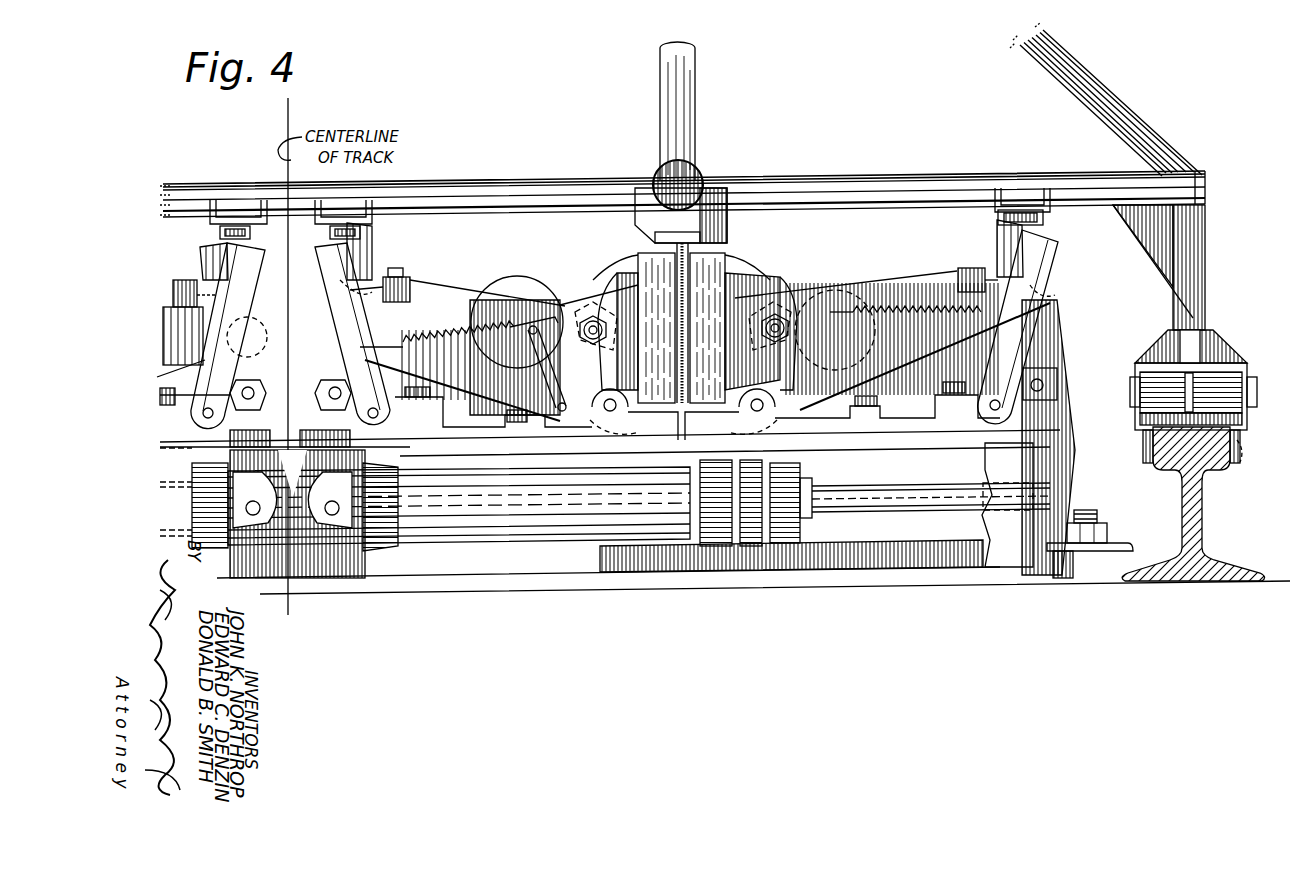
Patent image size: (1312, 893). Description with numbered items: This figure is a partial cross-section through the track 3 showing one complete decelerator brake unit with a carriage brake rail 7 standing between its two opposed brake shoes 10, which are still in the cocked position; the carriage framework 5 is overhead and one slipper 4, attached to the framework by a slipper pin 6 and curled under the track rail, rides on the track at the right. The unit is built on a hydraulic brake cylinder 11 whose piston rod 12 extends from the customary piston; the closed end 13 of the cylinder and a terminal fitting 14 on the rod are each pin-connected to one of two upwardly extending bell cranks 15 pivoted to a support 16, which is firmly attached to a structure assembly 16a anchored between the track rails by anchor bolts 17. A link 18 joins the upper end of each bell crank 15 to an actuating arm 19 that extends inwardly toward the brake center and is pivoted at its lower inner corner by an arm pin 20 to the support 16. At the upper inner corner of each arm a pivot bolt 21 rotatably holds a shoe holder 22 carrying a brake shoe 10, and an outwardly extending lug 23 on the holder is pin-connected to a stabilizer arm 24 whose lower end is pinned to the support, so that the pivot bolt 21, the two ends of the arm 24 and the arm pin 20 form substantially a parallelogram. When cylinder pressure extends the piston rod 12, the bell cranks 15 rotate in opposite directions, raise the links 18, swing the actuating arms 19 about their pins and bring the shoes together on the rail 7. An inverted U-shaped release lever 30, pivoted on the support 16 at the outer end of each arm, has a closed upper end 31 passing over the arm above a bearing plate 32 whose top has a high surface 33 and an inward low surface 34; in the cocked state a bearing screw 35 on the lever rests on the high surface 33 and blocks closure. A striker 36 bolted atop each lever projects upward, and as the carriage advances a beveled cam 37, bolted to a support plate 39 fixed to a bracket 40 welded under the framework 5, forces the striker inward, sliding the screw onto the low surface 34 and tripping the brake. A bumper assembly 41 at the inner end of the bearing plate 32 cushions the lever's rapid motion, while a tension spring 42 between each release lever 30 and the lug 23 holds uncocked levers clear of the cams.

The track 3 is at (1205, 520).
The slipper 4 is at (1245, 455).
The carriage framework 5 is at (658, 118).
The slipper pin 6 is at (1130, 395).
The brake rail 7 is at (725, 238).
The brake shoe 10 is at (650, 262).
The hydraulic brake cylinder 11 is at (568, 540).
The piston rod 12 is at (890, 520).
The closed end 13 is at (335, 560).
The terminal fitting 14 is at (1012, 560).
The bell crank 15 is at (300, 420).
The support 16 is at (430, 425).
The structure assembly 16a is at (640, 565).
The anchor bolt 17 is at (1090, 512).
The link 18 is at (340, 352).
The actuating arm 19 is at (440, 284).
The arm pin 20 is at (614, 410).
The pivot bolt 21 is at (593, 320).
The shoe holder 22 is at (620, 266).
The lug 23 is at (562, 310).
The stabilizer arm 24 is at (520, 322).
The release lever 30 is at (397, 367).
The closed upper end 31 is at (323, 260).
The bearing plate 32 is at (372, 306).
The high surface 33 is at (318, 273).
The low surface 34 is at (370, 280).
The bearing screw 35 is at (372, 238).
The striker 36 is at (368, 224).
The cam 37 is at (340, 225).
The support plate 39 is at (1050, 212).
The bracket 40 is at (1010, 210).
The bumper assembly 41 is at (398, 277).
The tension spring 42 is at (440, 338).